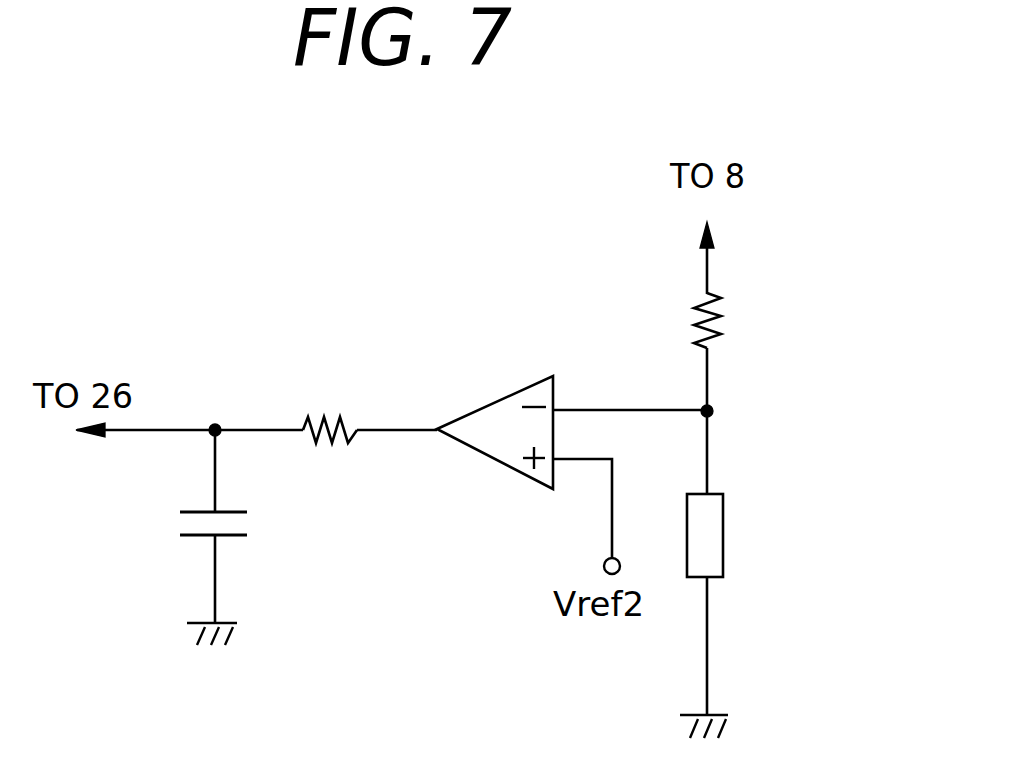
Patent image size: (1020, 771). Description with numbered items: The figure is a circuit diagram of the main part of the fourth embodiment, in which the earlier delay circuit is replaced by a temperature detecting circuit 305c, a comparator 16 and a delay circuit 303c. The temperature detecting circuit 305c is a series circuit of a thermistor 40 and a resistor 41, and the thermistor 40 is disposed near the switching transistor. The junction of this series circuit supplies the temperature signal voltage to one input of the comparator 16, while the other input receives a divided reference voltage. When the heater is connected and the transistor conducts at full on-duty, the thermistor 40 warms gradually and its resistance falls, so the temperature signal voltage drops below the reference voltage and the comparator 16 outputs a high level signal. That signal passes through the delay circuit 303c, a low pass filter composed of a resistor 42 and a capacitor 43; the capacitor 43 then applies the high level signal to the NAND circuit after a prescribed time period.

The comparator 16 is at (490, 415).
The thermistor 40 is at (708, 528).
The resistor 41 is at (718, 325).
The resistor 42 is at (325, 442).
The capacitor 43 is at (201, 536).
The delay circuit 303c is at (243, 558).
The temperature detecting circuit 305c is at (755, 545).